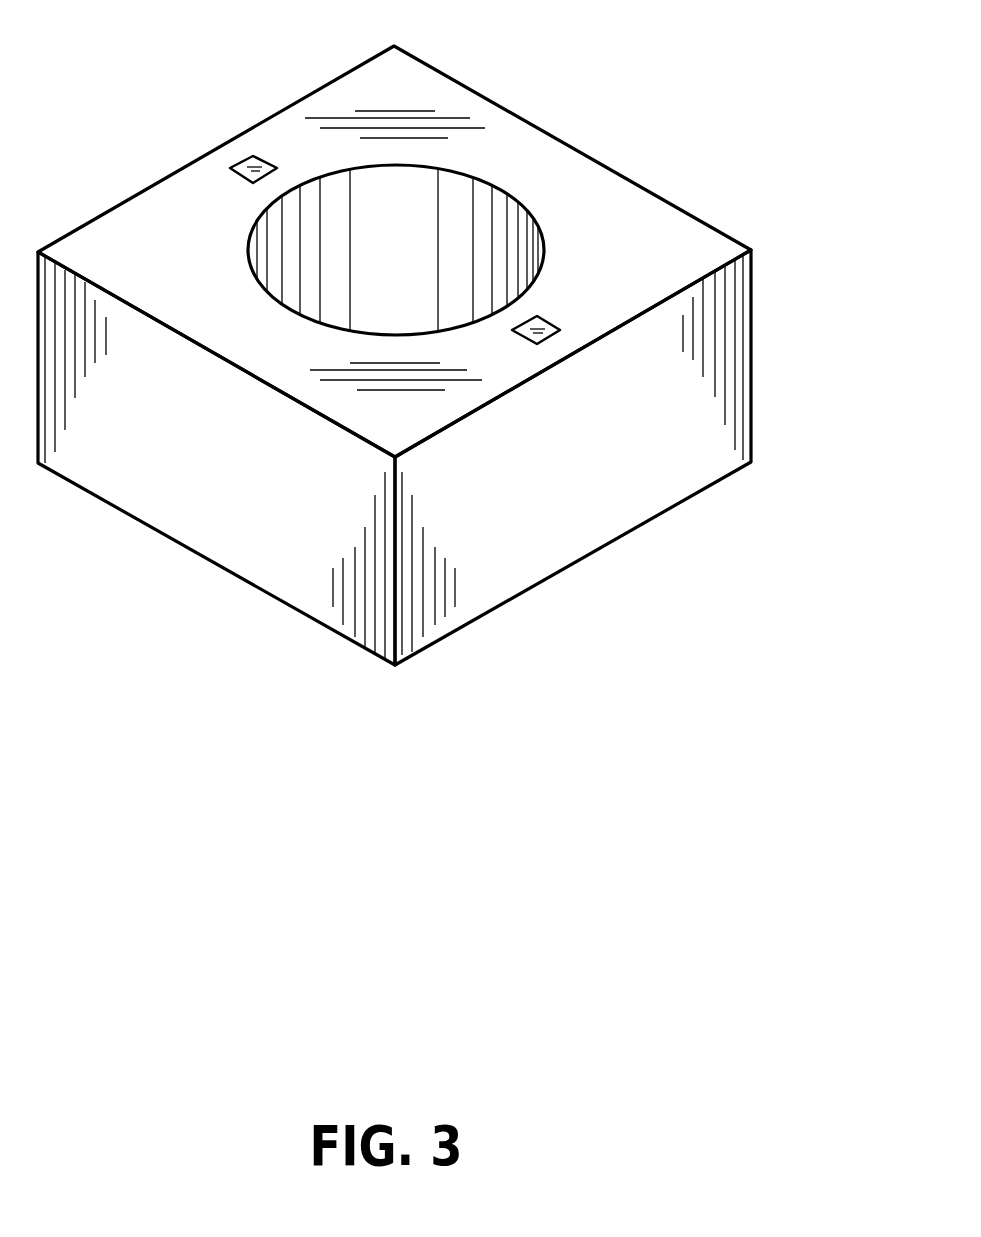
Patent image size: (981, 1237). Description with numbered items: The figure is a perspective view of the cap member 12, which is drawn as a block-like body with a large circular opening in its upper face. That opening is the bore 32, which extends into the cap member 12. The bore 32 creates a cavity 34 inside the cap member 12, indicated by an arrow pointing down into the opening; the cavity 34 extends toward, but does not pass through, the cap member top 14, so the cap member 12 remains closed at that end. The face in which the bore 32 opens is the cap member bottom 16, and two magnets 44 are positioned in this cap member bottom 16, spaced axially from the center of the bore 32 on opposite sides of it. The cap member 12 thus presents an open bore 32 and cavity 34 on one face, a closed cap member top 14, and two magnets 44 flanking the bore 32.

The cap member 12 is at (693, 420).
The cap member top 14 is at (262, 590).
The cap member bottom 16 is at (618, 222).
The bore 32 is at (332, 172).
The cavity 34 is at (412, 212).
The magnets 44 is at (250, 165).